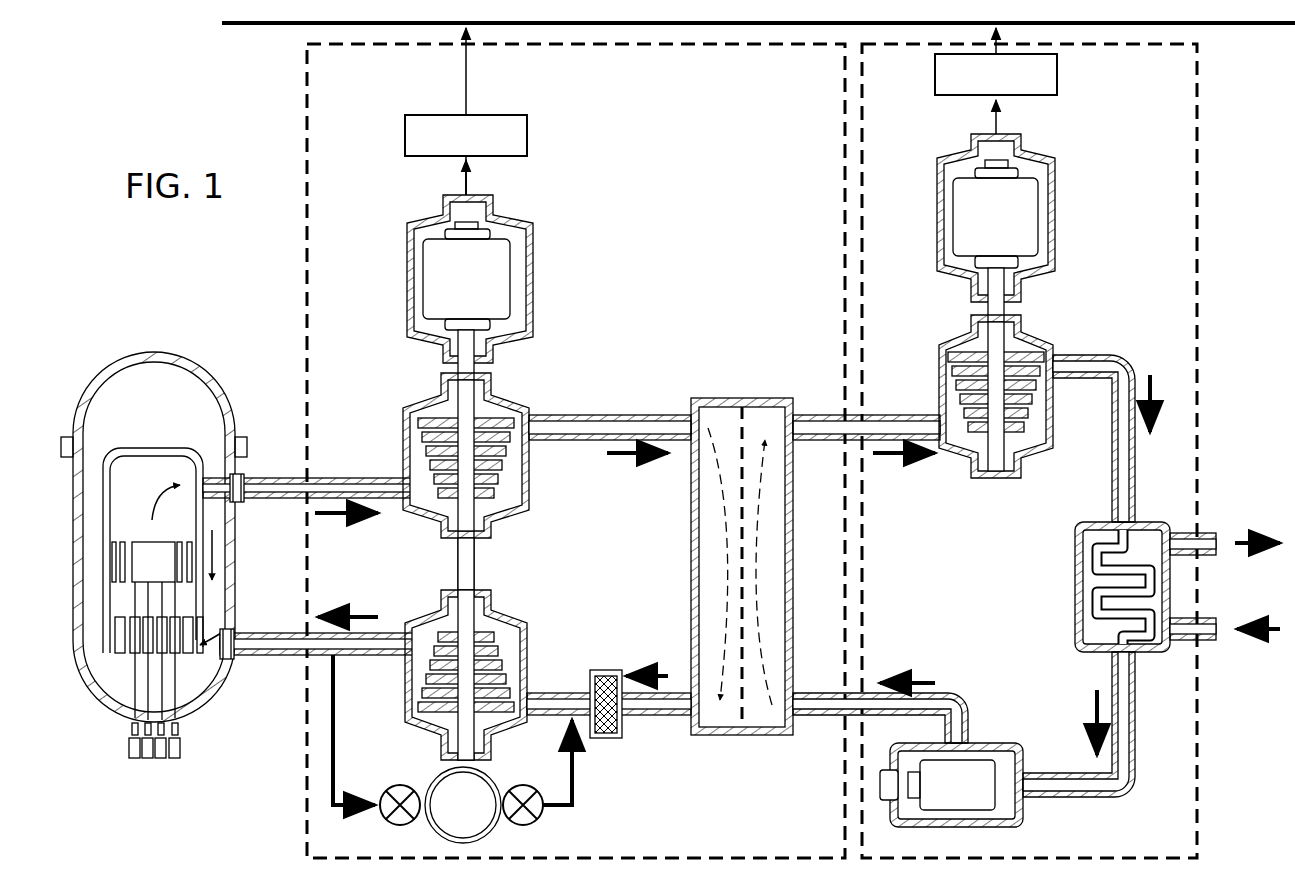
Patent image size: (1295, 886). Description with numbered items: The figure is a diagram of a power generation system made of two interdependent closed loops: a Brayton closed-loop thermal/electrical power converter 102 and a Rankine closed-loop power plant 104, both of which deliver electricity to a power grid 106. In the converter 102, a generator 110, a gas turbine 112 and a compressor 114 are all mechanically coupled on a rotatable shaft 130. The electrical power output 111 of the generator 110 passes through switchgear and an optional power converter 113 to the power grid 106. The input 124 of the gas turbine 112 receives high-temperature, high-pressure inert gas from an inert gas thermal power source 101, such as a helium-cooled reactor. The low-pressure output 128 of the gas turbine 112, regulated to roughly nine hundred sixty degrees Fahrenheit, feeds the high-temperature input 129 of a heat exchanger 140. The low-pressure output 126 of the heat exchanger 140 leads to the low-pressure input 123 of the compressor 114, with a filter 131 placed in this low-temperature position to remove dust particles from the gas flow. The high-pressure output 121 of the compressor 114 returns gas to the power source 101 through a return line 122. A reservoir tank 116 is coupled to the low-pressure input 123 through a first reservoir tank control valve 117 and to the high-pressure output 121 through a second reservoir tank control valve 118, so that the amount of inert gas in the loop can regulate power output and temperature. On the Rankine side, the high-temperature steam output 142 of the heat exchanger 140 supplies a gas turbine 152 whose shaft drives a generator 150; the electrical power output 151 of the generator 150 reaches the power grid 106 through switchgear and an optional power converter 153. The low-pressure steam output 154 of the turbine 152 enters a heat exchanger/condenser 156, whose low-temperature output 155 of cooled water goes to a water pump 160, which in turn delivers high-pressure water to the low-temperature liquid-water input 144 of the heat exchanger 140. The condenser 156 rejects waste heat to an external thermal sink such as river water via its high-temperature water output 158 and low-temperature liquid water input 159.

The inert gas thermal power source 101 is at (162, 352).
The thermal/electrical power converter 102 is at (303, 320).
The thermally driven Rankine-cycle power plant 104 is at (1200, 333).
The power grid 106 is at (266, 28).
The generator 110 is at (407, 280).
The electrical power output 111 is at (460, 188).
The gas turbine 112 is at (531, 455).
The switchgear and optional power converter 113 is at (404, 134).
The compressor 114 is at (433, 606).
The reservoir tank 116 is at (500, 830).
The first reservoir tank control valve 117 is at (530, 785).
The second reservoir tank control valve 118 is at (400, 785).
The high-pressure output 121 is at (396, 668).
The return line 122 is at (256, 672).
The low-pressure input 123 is at (542, 680).
The input 124 is at (400, 462).
The low-pressure output 126 is at (680, 745).
The low-pressure output 128 is at (546, 402).
The high-temperature input 129 is at (681, 403).
The rotatable shaft 130 is at (476, 566).
The filter 131 is at (606, 670).
The heat exchanger 140 is at (741, 398).
The high-temperature steam output 142 is at (809, 402).
The low-temperature liquid-water input 144 is at (805, 745).
The generator 150 is at (1056, 220).
The electrical power output 151 is at (1003, 112).
The gas turbine 152 is at (953, 326).
The switchgear and optional power converter 153 is at (1060, 74).
The low-pressure steam output 154 is at (1074, 340).
The low-temperature output 155 is at (1094, 670).
The heat exchanger/condenser 156 is at (1075, 590).
The high-temperature water output 158 is at (1186, 520).
The low-temperature liquid water input 159 is at (1186, 665).
The water pump 160 is at (992, 745).